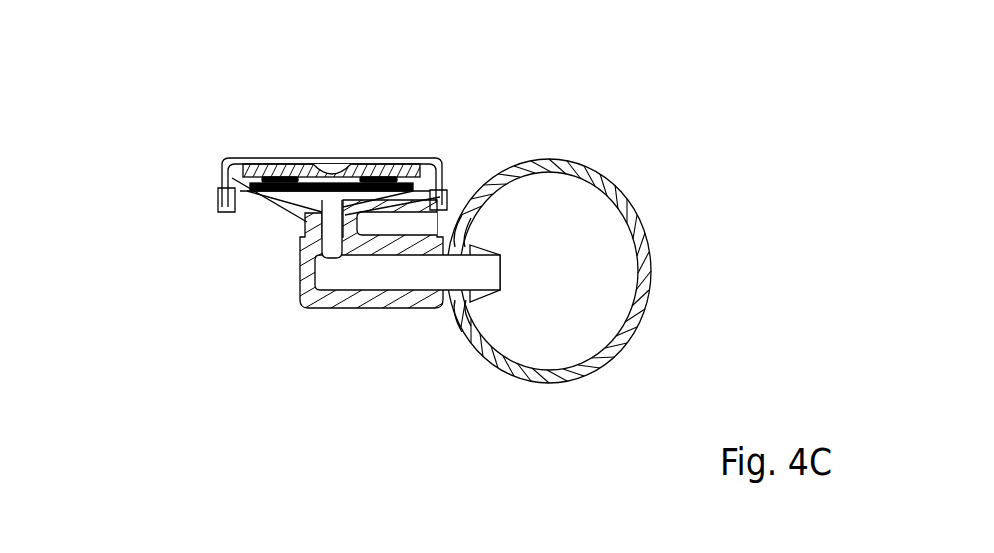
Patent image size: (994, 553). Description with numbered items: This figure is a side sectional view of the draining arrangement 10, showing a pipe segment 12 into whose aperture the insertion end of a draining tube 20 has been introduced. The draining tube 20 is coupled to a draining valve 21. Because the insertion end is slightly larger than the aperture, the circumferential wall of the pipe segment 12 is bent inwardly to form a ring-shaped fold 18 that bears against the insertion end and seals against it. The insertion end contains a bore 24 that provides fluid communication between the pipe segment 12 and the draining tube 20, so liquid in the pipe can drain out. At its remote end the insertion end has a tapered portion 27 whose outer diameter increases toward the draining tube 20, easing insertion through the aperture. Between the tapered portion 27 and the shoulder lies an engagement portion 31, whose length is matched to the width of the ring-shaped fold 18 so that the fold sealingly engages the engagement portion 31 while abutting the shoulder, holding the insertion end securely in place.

The draining arrangement 10 is at (213, 122).
The pipe segment 12 is at (622, 205).
The ring-shaped fold 18 is at (300, 242).
The draining tube 20 is at (355, 300).
The draining valve 21 is at (380, 160).
The bore 24 is at (390, 270).
The tapered portion 27 is at (482, 300).
The engagement portion 31 is at (452, 290).